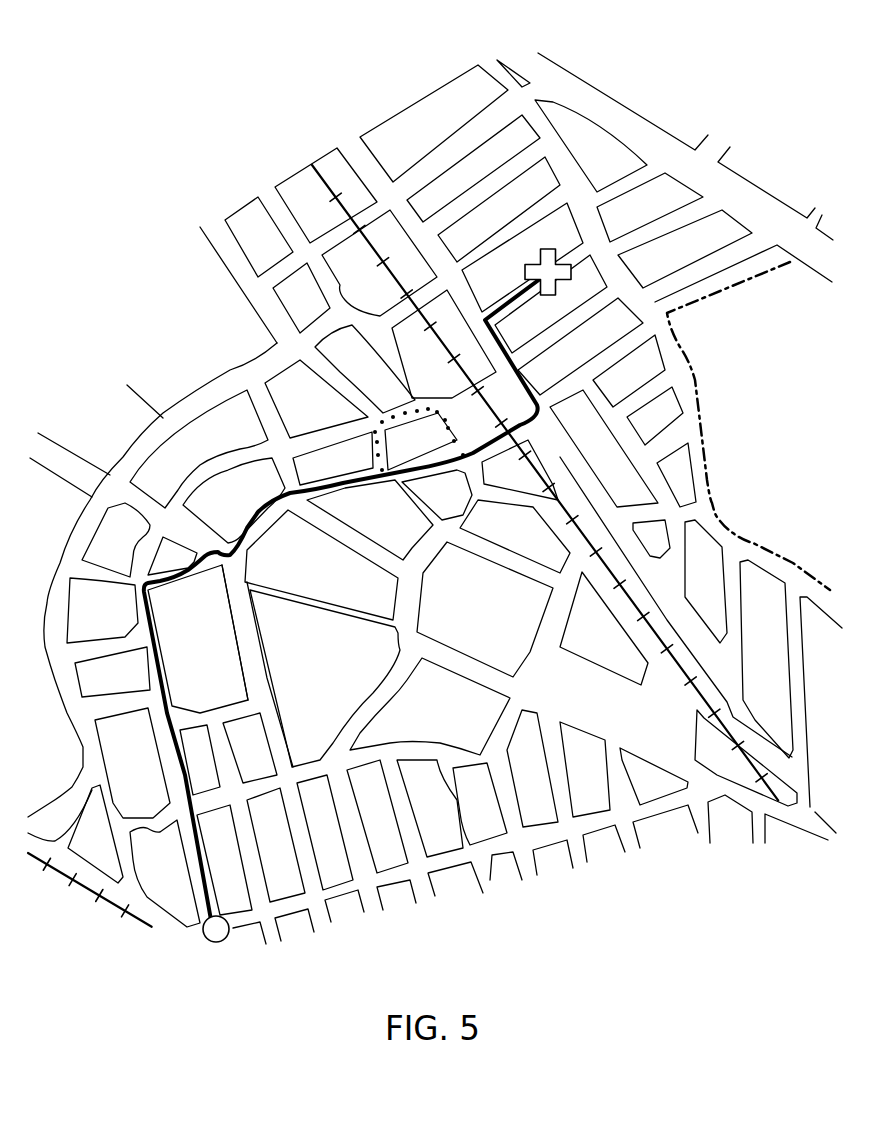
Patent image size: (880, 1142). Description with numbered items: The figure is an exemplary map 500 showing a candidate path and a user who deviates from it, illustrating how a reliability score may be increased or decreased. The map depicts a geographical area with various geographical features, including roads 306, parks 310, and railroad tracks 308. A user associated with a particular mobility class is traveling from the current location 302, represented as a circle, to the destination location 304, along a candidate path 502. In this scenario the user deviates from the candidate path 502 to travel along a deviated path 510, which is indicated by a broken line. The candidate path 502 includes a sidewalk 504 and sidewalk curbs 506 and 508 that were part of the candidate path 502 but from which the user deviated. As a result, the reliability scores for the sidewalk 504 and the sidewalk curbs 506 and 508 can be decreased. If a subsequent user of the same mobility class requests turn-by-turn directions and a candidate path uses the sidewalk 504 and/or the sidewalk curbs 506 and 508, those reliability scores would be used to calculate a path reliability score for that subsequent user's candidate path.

The map display with route 500 is at (643, 42).
The current location 302 is at (218, 942).
The destination location 304 is at (538, 255).
The roads 306 is at (275, 730).
The railroad tracks 308 is at (373, 247).
The parks 310 is at (478, 344).
The candidate path 502 is at (200, 592).
The sidewalk 504 is at (433, 472).
The sidewalk curb 506 is at (382, 474).
The sidewalk curb 508 is at (467, 457).
The deviated path 510 is at (352, 414).